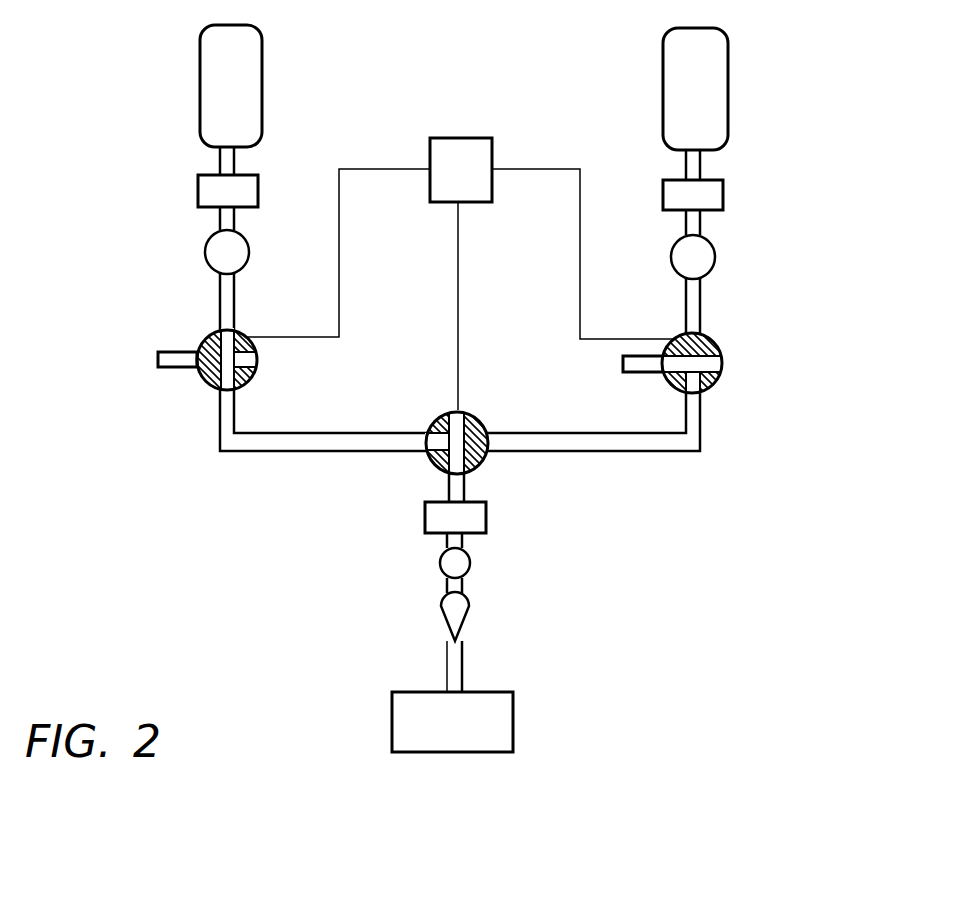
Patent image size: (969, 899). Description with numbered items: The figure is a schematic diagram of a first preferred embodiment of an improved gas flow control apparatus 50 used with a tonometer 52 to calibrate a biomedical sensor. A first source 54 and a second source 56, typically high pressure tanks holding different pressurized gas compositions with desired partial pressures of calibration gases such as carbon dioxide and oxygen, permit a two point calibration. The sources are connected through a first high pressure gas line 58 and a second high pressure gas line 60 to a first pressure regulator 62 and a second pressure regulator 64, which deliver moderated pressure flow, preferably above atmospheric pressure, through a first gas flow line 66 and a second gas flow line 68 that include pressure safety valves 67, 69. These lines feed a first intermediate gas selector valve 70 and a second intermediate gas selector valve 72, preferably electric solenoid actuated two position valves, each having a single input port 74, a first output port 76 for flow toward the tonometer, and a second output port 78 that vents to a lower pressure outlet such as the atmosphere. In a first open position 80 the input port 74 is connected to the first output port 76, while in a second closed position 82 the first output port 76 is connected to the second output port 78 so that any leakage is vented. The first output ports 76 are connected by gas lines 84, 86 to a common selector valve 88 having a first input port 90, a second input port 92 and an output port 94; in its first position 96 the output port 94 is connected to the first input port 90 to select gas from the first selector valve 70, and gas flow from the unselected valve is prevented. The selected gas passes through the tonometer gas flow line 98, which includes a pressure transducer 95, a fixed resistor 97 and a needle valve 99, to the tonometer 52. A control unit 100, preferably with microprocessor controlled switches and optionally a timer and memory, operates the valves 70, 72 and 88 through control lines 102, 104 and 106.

The gas flow control apparatus 50 is at (772, 88).
The tonometer 52 is at (473, 705).
The first source 54 is at (187, 86).
The second source 56 is at (731, 85).
The first high pressure gas line 58 is at (183, 155).
The second high pressure gas line 60 is at (742, 155).
The first pressure regulator 62 is at (167, 181).
The second pressure regulator 64 is at (729, 185).
The first gas flow line 66 is at (181, 302).
The pressure safety valve 67 is at (186, 240).
The second gas flow line 68 is at (733, 312).
The pressure safety valve 69 is at (729, 244).
The first intermediate gas selector valve 70 is at (188, 402).
The second intermediate gas selector valve 72 is at (750, 443).
The input port 74 is at (461, 309).
The first output port 76 is at (502, 411).
The second output port 78 is at (391, 381).
The first open position 80 is at (283, 389).
The second closed position 82 is at (768, 392).
The gas line 84 is at (324, 441).
The gas line 86 is at (593, 447).
The common selector valve 88 is at (515, 495).
The first input port 90 is at (399, 406).
The second input port 92 is at (516, 404).
The output port 94 is at (413, 494).
The pressure transducer 95 is at (408, 527).
The first position 96 is at (520, 479).
The fixed resistor 97 is at (415, 565).
The tonometer gas flow line 98 is at (491, 576).
The needle valve 99 is at (415, 642).
The control unit 100 is at (448, 146).
The control line 102 is at (338, 228).
The control line 104 is at (583, 230).
The control line 106 is at (502, 307).